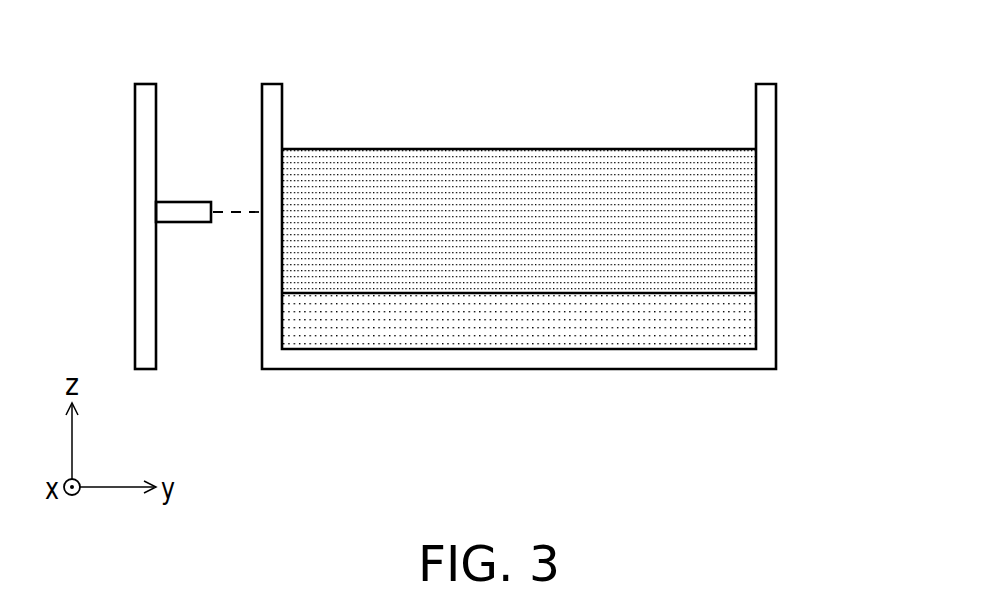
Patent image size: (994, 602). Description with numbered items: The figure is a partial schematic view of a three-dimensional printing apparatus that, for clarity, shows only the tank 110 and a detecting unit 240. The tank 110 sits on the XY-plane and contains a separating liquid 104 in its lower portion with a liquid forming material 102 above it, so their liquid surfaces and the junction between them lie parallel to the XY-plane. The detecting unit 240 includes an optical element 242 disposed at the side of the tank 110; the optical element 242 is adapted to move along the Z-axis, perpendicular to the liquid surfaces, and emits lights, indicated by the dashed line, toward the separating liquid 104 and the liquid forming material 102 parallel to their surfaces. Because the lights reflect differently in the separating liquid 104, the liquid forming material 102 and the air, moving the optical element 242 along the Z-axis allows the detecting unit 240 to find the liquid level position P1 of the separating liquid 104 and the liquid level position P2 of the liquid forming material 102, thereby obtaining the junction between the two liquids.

The tank 110 is at (768, 125).
The liquid forming material 102 is at (745, 194).
The separating liquid 104 is at (745, 320).
The detecting unit 240 is at (112, 70).
The optical element 242 is at (188, 216).
The liquid level position of the liquid forming material P2 is at (281, 148).
The liquid level position of the separating liquid P1 is at (281, 293).